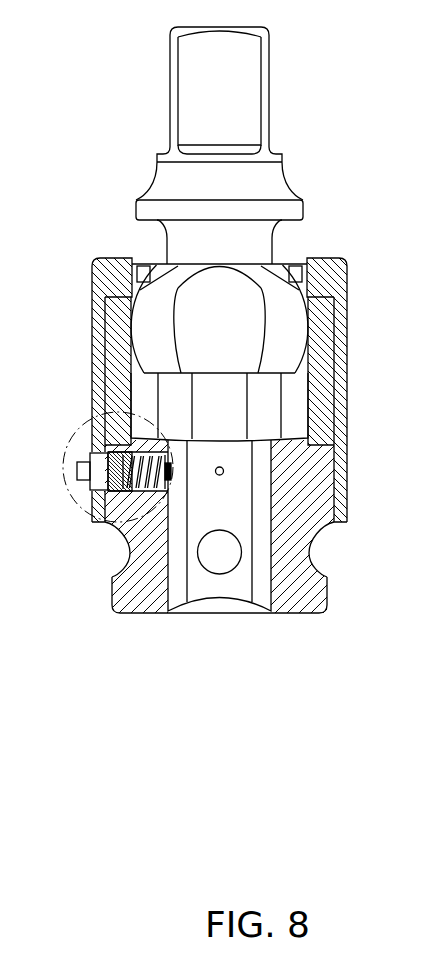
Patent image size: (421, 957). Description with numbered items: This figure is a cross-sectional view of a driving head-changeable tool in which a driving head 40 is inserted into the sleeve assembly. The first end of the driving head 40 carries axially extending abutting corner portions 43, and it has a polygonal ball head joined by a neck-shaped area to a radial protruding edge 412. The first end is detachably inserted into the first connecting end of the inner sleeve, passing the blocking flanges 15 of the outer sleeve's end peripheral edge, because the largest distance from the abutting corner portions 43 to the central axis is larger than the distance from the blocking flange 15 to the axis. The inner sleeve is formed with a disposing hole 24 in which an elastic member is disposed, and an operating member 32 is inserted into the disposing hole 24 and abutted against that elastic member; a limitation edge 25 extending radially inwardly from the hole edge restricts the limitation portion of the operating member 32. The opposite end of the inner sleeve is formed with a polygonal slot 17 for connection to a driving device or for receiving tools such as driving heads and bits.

The driving head 40 is at (126, 152).
The radial protruding edge 412 is at (150, 213).
The blocking flange 15 is at (209, 410).
The abutting corner portion 43 is at (298, 302).
The limitation edge 25 is at (103, 445).
The operating member 32 is at (87, 459).
The disposing hole 24 is at (112, 527).
The polygonal slot 17 is at (110, 575).